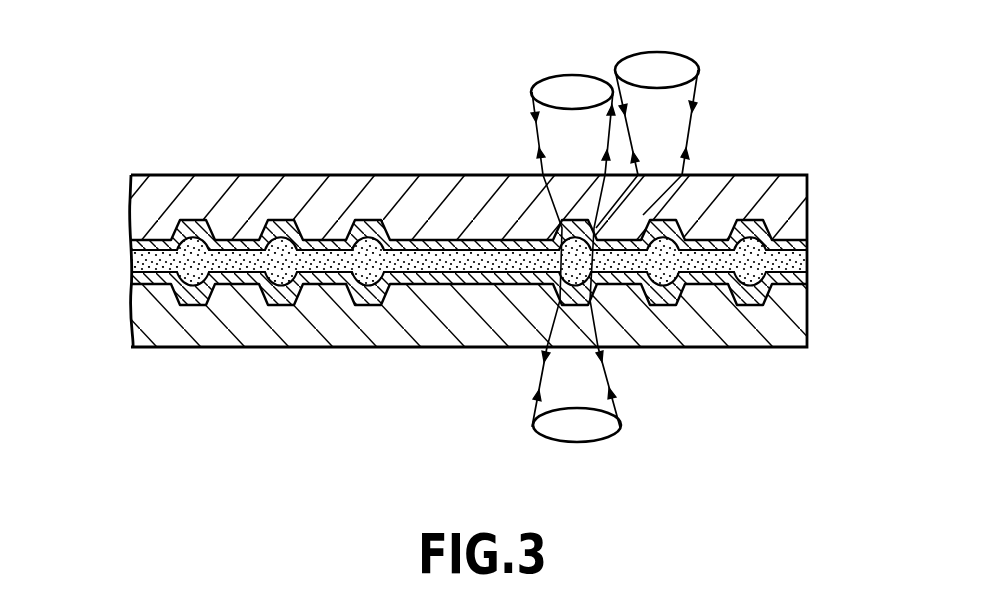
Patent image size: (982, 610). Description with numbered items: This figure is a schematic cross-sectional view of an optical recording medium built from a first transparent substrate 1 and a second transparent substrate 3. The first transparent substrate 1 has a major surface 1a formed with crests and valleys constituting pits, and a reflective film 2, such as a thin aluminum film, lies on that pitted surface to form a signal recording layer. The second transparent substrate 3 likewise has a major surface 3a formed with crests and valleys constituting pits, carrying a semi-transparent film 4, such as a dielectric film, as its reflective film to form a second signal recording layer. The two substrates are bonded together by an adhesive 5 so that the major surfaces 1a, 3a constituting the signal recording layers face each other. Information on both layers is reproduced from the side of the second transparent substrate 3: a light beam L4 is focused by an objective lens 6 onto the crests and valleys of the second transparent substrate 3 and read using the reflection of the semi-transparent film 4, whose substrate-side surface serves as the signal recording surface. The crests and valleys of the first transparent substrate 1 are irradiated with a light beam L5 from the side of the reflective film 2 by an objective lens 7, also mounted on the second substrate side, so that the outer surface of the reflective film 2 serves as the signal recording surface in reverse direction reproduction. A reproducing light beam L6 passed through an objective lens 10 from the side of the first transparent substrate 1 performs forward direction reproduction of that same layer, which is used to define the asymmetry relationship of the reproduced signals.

The first transparent substrate 1 is at (790, 310).
The major surface 1a is at (808, 257).
The reflective film 2 is at (132, 278).
The second transparent substrate 3 is at (790, 193).
The major surface 3a is at (808, 248).
The semi-transparent film 4 is at (132, 243).
The adhesive 5 is at (132, 260).
The objective lens 6 is at (667, 70).
The objective lens 7 is at (568, 90).
The objective lens 10 is at (588, 428).
The light beam L4 is at (688, 133).
The light beam L5 is at (540, 172).
The reproducing light beam L6 is at (610, 370).